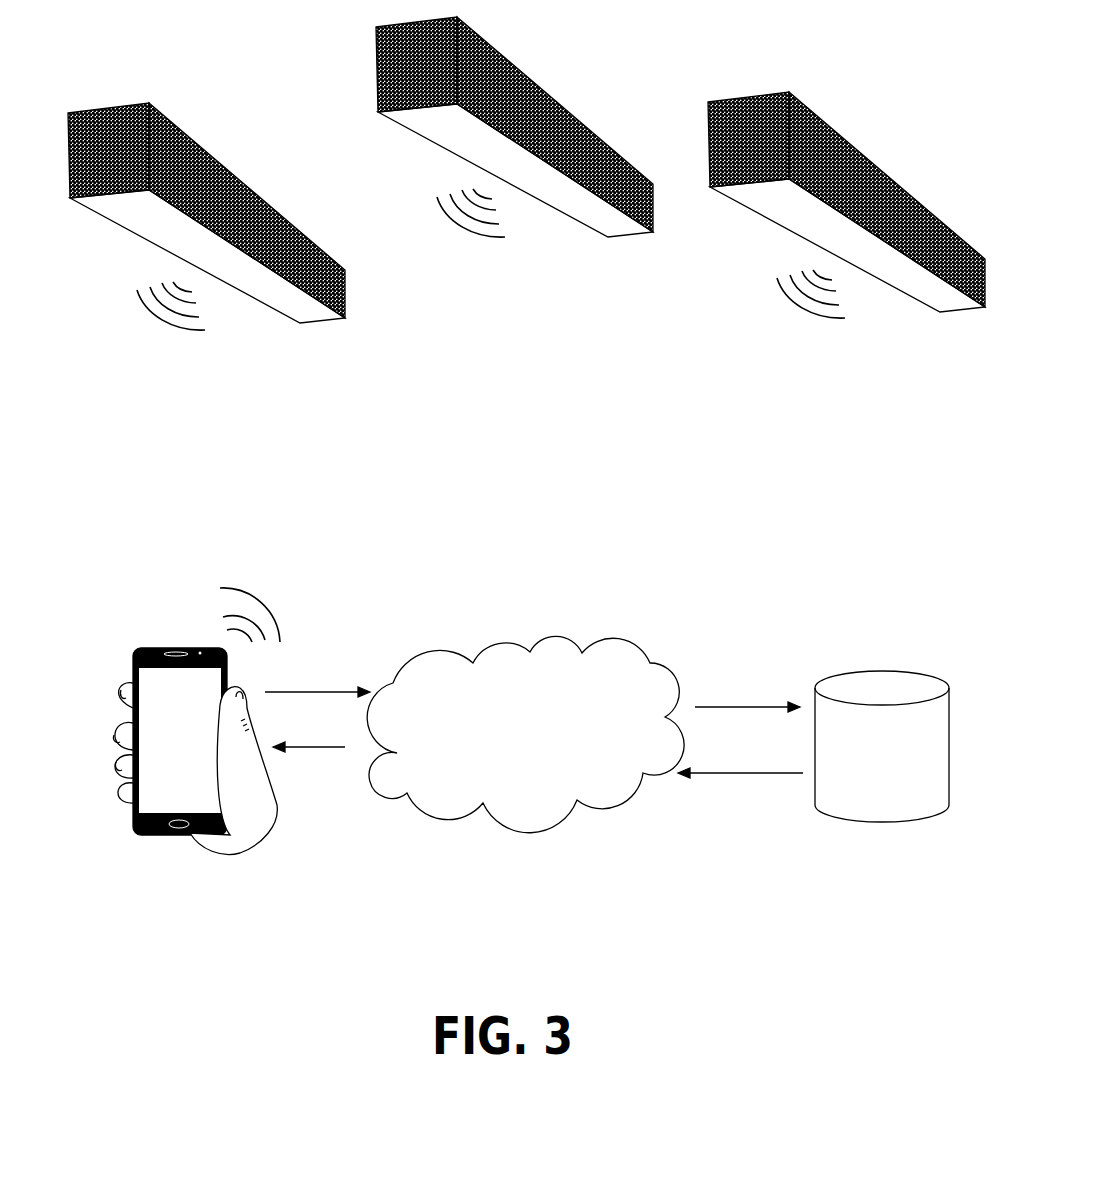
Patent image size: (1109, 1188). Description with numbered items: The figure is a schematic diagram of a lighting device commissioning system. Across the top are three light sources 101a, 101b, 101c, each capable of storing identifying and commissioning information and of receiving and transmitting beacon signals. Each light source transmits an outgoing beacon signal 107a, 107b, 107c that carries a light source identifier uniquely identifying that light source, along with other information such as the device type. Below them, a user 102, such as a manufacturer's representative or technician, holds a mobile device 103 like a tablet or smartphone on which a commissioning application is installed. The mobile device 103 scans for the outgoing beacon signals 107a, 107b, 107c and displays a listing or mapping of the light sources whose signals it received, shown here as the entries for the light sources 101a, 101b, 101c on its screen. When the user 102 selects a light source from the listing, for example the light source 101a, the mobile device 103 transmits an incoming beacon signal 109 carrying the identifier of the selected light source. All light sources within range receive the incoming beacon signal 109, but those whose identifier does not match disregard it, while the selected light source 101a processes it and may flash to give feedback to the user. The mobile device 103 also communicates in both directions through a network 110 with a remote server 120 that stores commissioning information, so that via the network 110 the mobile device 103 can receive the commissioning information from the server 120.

The light source 101a is at (297, 243).
The light source 101b is at (565, 133).
The light source 101c is at (903, 203).
The outgoing beacon signal 107a is at (172, 324).
The outgoing beacon signal 107b is at (500, 237).
The outgoing beacon signal 107c is at (828, 320).
The incoming beacon signal 109 is at (220, 606).
The mobile device 103 is at (132, 822).
The user 102 is at (255, 815).
The network 110 is at (530, 756).
The remote server 120 is at (900, 778).